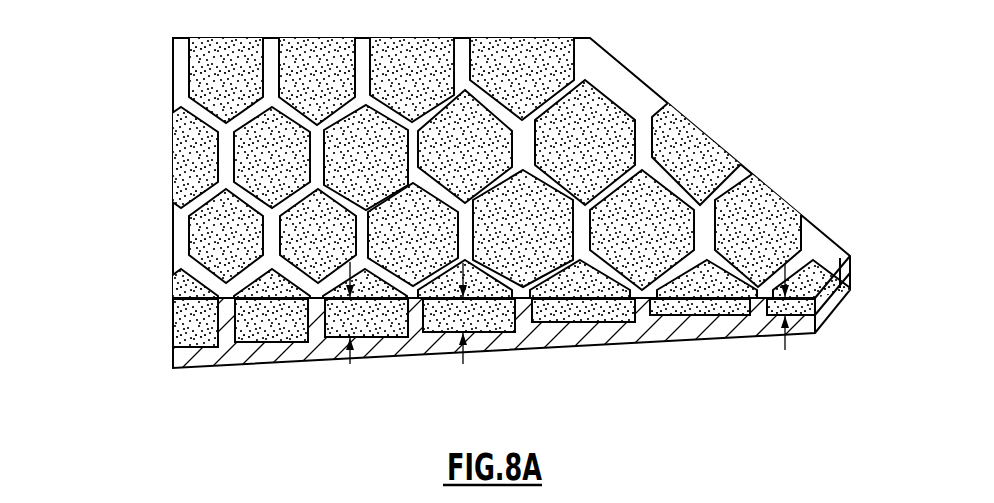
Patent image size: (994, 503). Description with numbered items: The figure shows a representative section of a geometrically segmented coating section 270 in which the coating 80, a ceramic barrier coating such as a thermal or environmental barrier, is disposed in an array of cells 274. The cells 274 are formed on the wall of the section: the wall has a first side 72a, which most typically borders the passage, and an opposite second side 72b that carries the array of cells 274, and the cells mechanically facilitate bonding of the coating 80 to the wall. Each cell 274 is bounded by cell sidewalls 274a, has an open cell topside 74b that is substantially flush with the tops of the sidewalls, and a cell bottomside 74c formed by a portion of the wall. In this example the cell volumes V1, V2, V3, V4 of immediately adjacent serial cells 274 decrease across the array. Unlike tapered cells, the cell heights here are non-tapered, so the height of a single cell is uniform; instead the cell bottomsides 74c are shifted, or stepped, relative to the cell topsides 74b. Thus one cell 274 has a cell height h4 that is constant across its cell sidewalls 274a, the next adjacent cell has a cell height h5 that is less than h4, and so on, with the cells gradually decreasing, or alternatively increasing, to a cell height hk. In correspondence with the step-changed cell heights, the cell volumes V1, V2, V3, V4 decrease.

The geometrically segmented coating section 270 is at (449, 211).
The coating 80 is at (180, 318).
The cells 274 is at (498, 182).
The cell sidewalls 274a is at (436, 313).
The cell volume V1 is at (322, 250).
The cell volume V2 is at (425, 251).
The cell volume V3 is at (528, 244).
The cell volume V4 is at (676, 239).
The cell height h4 is at (350, 364).
The cell height h5 is at (464, 364).
The cell height hk is at (784, 349).
The cell topside 74b is at (649, 317).
The cell bottomside 74c is at (588, 317).
The first side 72a is at (800, 335).
The second side 72b is at (698, 313).